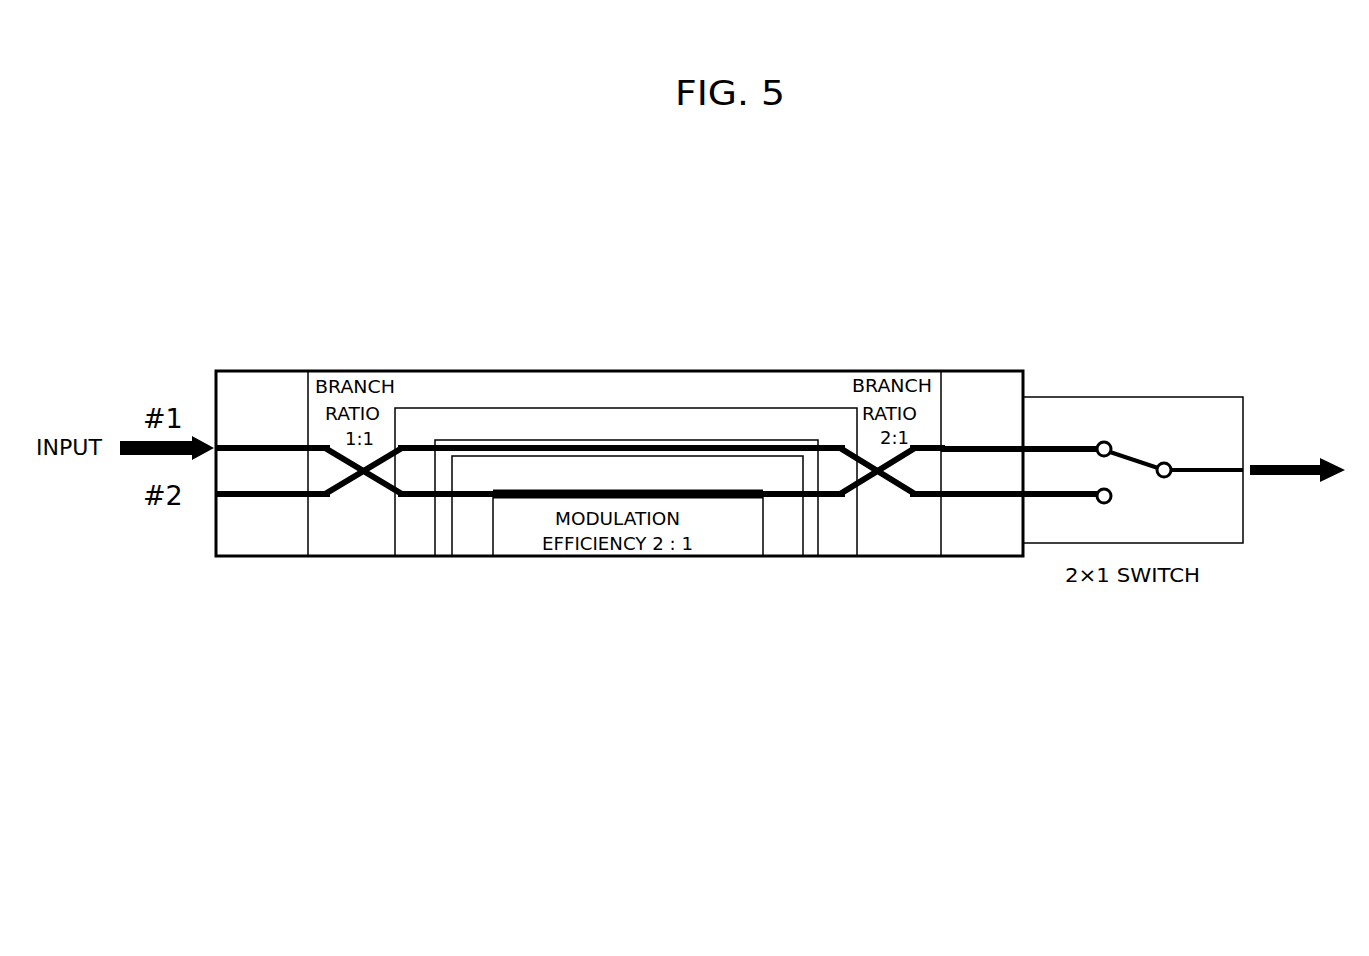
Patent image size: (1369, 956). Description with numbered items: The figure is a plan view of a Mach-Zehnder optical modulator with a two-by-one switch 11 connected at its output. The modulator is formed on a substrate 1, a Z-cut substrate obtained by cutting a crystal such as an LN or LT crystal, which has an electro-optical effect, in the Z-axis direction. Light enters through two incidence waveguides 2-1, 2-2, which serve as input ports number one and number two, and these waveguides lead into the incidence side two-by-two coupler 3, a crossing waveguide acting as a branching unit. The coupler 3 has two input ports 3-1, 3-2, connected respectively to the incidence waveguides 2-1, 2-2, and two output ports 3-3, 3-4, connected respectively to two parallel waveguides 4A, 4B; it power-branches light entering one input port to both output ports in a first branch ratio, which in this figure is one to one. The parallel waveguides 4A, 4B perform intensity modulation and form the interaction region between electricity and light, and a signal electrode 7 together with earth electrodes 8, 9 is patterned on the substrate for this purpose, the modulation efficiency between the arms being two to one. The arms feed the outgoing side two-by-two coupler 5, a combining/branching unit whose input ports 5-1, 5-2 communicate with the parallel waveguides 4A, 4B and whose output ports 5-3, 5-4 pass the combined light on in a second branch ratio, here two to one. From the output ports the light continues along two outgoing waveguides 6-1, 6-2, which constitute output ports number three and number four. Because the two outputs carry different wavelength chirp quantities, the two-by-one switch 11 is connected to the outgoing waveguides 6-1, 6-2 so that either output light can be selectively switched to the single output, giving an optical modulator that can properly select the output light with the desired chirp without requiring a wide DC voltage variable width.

The substrate 1 is at (1005, 383).
The incidence waveguide 2-1 is at (268, 447).
The incidence waveguide 2-2 is at (247, 497).
The incidence side 2×2 coupler 3 is at (362, 478).
The input port 3-1 is at (338, 462).
The input port 3-2 is at (332, 500).
The output port 3-3 is at (385, 456).
The output port 3-4 is at (378, 482).
The parallel waveguide 4A is at (540, 446).
The parallel waveguide 4B is at (575, 490).
The outgoing side 2×2 coupler 5 is at (877, 482).
The input port 5-1 is at (852, 445).
The input port 5-2 is at (855, 484).
The output port 5-3 is at (900, 458).
The output port 5-4 is at (895, 480).
The outgoing waveguide 6-1 is at (973, 445).
The outgoing waveguide 6-2 is at (971, 496).
The signal electrode 7 is at (445, 545).
The earth electrode 8 is at (338, 540).
The earth electrode 9 is at (720, 545).
The 2×1 switch 11 is at (1133, 397).